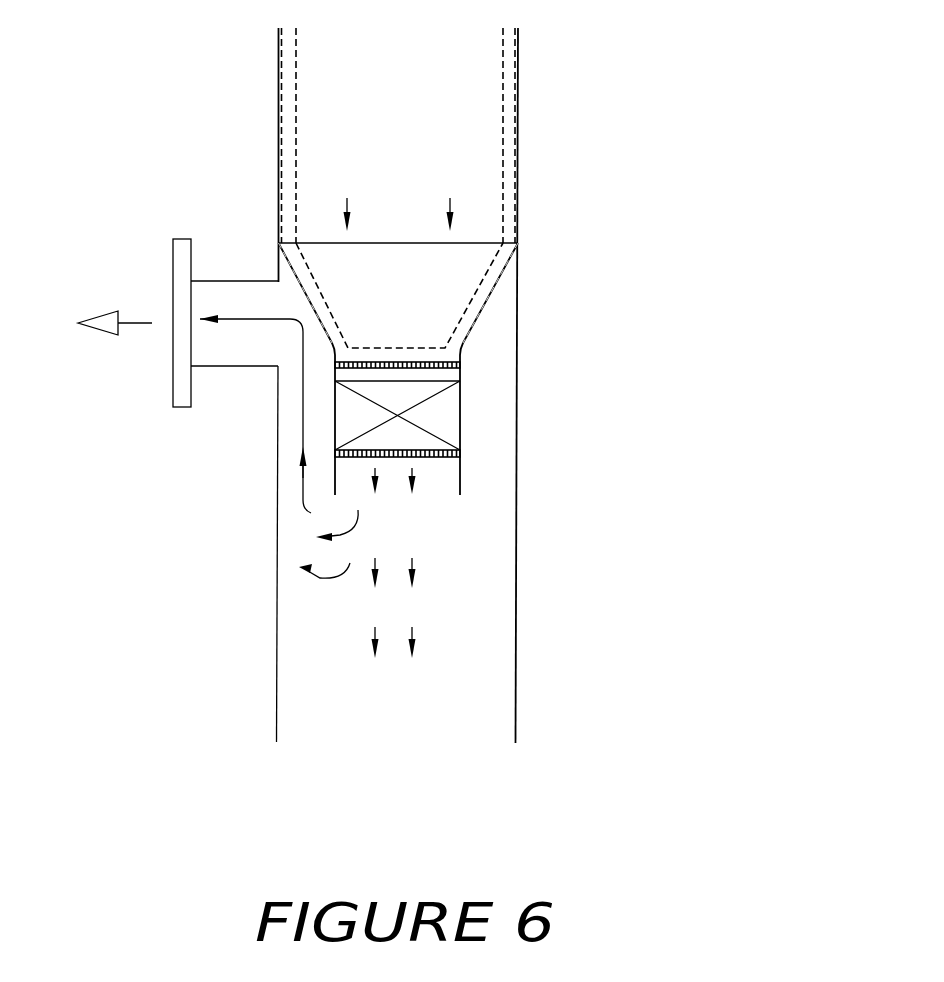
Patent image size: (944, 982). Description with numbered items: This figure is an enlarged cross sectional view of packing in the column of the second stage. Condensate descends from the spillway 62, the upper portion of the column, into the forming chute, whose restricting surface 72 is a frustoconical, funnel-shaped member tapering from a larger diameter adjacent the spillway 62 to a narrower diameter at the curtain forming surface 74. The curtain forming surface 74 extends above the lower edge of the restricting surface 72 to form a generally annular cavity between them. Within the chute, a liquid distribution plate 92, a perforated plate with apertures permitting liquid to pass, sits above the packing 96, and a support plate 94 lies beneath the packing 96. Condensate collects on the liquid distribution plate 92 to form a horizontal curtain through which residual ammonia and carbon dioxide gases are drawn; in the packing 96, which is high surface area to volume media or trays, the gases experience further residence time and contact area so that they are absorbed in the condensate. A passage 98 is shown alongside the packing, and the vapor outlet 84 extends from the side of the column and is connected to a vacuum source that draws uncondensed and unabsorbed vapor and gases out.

The spillway 62 is at (523, 95).
The restricting surface 72 is at (500, 281).
The curtain forming surface 74 is at (404, 355).
The liquid distribution plate 92 is at (466, 364).
The packing 96 is at (445, 418).
The support plate 94 is at (466, 457).
The bypass passage 98 is at (329, 413).
The vapor outlet 84 is at (168, 313).